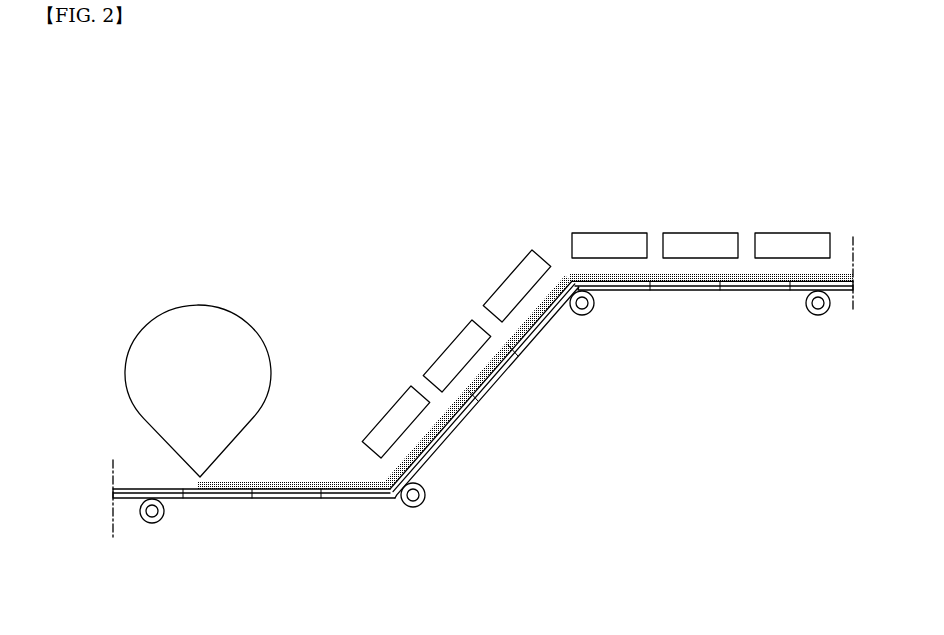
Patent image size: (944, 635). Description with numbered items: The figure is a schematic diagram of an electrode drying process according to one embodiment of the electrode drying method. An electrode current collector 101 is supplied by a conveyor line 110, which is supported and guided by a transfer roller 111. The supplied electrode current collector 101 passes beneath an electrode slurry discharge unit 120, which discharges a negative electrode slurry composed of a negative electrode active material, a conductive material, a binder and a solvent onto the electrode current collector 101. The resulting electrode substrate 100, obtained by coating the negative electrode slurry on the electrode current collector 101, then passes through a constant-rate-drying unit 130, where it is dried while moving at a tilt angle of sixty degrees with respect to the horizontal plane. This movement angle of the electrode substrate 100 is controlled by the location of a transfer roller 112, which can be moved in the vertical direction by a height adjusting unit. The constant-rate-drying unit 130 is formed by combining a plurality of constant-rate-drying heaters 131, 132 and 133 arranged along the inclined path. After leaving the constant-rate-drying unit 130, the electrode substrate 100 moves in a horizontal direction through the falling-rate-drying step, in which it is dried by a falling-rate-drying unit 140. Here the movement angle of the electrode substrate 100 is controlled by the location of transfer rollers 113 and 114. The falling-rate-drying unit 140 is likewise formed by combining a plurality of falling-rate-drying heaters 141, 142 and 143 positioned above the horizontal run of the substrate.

The electrode substrate 100 is at (319, 466).
The electrode current collector 101 is at (138, 488).
The conveyor line 110 is at (273, 499).
The transfer roller 111 is at (153, 523).
The transfer roller 112 is at (418, 506).
The transfer roller 113 is at (590, 314).
The transfer roller 114 is at (826, 314).
The electrode slurry discharge unit 120 is at (185, 305).
The constant-rate-drying unit 130 is at (350, 308).
The constant-rate-drying heater 131 is at (389, 403).
The constant-rate-drying heater 132 is at (444, 343).
The constant-rate-drying heater 133 is at (504, 279).
The falling-rate-drying unit 140 is at (578, 142).
The falling-rate-drying heater 141 is at (608, 233).
The falling-rate-drying heater 142 is at (698, 233).
The falling-rate-drying heater 143 is at (792, 233).